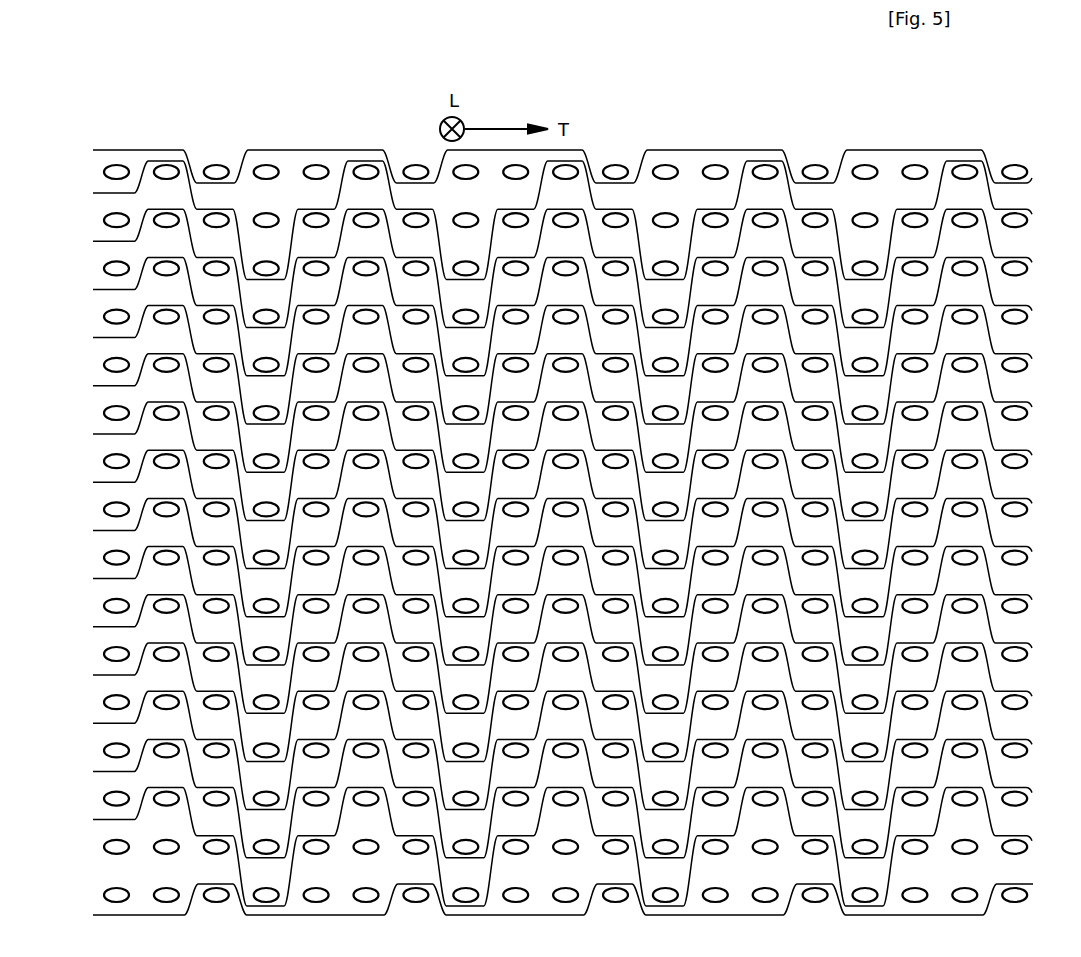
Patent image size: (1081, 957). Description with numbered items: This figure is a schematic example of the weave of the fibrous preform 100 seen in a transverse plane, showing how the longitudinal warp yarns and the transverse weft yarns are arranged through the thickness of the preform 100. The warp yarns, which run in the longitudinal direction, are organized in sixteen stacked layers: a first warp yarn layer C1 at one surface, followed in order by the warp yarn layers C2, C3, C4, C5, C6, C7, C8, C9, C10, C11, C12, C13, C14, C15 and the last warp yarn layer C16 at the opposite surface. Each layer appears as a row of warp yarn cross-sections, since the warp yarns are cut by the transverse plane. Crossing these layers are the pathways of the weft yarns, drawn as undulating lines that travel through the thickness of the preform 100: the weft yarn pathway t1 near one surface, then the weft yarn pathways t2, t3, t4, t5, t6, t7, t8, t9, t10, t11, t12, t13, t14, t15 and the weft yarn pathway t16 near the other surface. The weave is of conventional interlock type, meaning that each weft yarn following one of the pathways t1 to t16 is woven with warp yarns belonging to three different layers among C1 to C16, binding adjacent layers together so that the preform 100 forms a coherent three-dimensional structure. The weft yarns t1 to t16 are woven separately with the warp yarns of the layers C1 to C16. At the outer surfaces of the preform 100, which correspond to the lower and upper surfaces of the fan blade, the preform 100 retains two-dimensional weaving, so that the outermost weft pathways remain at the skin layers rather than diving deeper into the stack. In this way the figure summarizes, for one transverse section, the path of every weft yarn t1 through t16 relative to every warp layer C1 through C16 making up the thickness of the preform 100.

The preform 100 is at (570, 504).
The weft yarn pathway t1 is at (554, 159).
The weft yarn pathway t2 is at (554, 220).
The weft yarn pathway t3 is at (554, 268).
The weft yarn pathway t4 is at (554, 316).
The weft yarn pathway t5 is at (554, 365).
The weft yarn pathway t6 is at (554, 413).
The weft yarn pathway t7 is at (554, 461).
The weft yarn pathway t8 is at (554, 509).
The weft yarn pathway t9 is at (554, 557).
The weft yarn pathway t10 is at (549, 606).
The weft yarn pathway t11 is at (549, 654).
The weft yarn pathway t12 is at (549, 702).
The weft yarn pathway t13 is at (549, 750).
The weft yarn pathway t14 is at (549, 798).
The weft yarn pathway t15 is at (549, 847).
The weft yarn pathway t16 is at (550, 904).
The warp yarn layer C1 is at (1018, 170).
The warp yarn layer C2 is at (1018, 218).
The warp yarn layer C3 is at (1018, 266).
The warp yarn layer C4 is at (1018, 315).
The warp yarn layer C5 is at (1018, 363).
The warp yarn layer C6 is at (1018, 411).
The warp yarn layer C7 is at (1018, 459).
The warp yarn layer C8 is at (1018, 507).
The warp yarn layer C9 is at (1018, 556).
The warp yarn layer C10 is at (1018, 604).
The warp yarn layer C11 is at (1018, 652).
The warp yarn layer C12 is at (1018, 700).
The warp yarn layer C13 is at (1018, 748).
The warp yarn layer C14 is at (1018, 797).
The warp yarn layer C15 is at (1018, 845).
The warp yarn layer C16 is at (1018, 893).